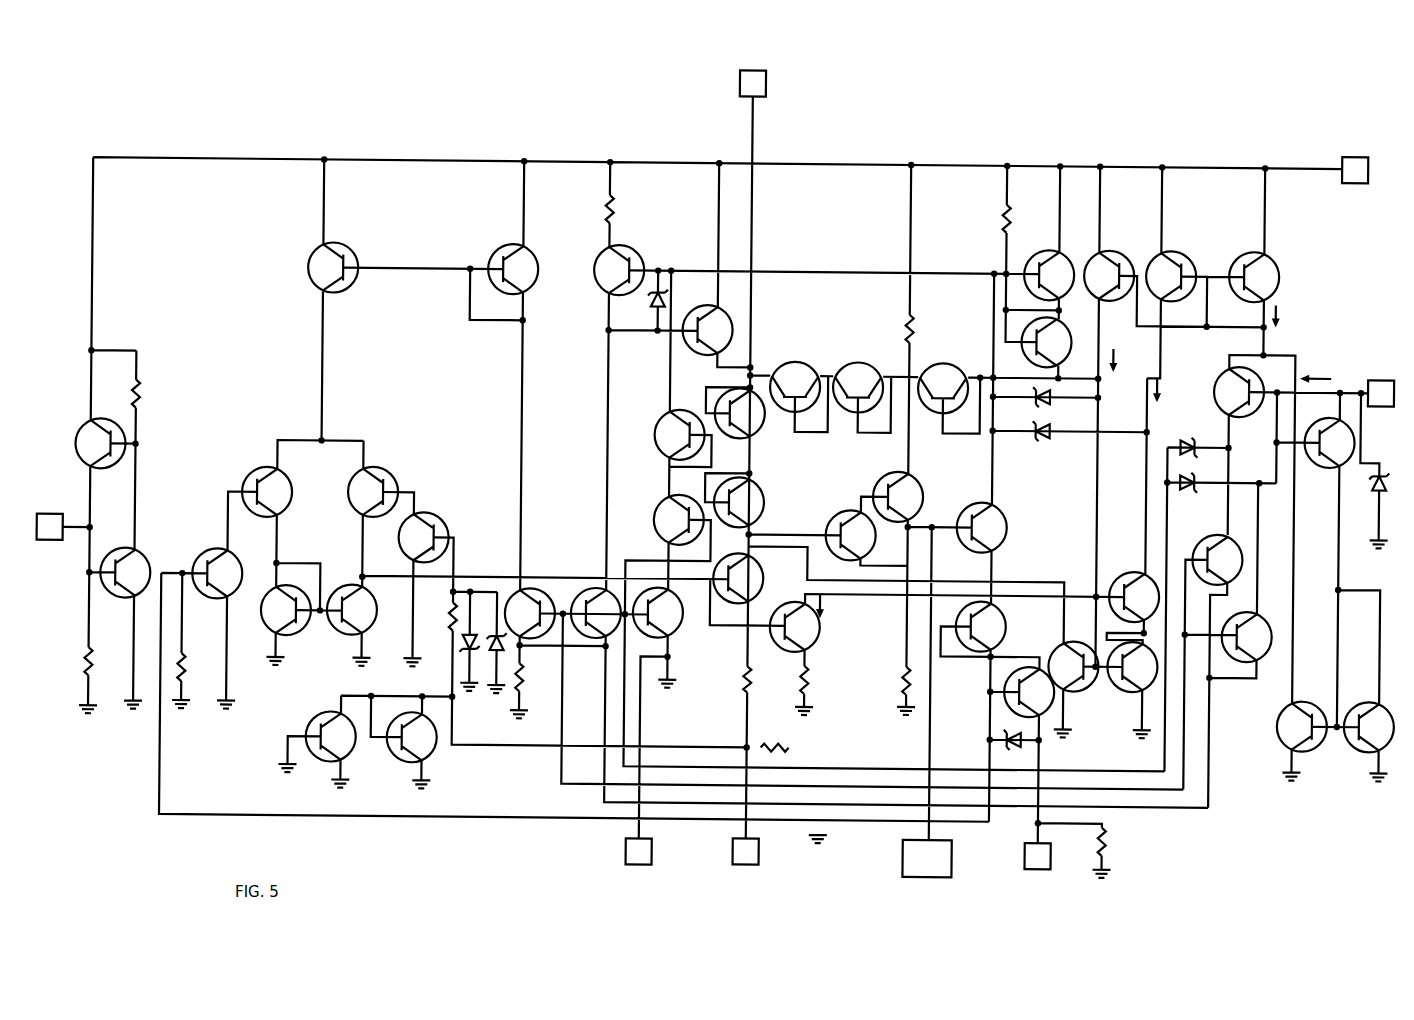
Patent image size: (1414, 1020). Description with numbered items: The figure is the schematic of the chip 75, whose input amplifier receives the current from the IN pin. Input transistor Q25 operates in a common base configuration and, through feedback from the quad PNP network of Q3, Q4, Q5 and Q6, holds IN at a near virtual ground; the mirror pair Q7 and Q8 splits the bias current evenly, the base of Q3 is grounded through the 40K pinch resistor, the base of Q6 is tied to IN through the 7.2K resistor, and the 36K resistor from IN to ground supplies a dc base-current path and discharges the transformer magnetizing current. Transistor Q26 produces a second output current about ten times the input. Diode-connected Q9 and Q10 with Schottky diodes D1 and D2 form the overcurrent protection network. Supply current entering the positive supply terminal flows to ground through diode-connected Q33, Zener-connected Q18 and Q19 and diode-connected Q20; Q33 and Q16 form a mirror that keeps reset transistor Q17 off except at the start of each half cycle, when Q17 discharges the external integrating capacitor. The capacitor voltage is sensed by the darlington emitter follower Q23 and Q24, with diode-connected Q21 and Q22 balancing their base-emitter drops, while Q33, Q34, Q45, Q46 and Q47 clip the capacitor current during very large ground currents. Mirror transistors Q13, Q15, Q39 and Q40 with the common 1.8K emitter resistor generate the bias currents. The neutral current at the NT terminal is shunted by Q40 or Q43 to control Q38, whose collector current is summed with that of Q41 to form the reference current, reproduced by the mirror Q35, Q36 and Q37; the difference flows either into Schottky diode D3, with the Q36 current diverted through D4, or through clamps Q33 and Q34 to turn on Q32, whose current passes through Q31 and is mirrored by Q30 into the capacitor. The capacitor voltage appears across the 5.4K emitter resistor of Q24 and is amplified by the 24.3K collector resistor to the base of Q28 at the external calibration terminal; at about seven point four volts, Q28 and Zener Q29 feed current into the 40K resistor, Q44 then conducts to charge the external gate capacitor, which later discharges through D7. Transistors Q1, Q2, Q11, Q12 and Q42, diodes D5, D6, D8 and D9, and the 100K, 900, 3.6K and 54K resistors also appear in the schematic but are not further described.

The chip 75 is at (700, 914).
The transistor Q1 is at (88, 434).
The transistor Q2 is at (135, 565).
The quad PNP transistor Q3 is at (215, 566).
The quad PNP transistor Q4 is at (258, 483).
The quad PNP transistor Q5 is at (387, 482).
The quad PNP transistor Q6 is at (435, 532).
The mirror transistor Q7 is at (279, 602).
The mirror transistor Q8 is at (352, 600).
The diode-connected transistor Q9 is at (319, 731).
The diode-connected transistor Q10 is at (431, 748).
The transistor Q11 is at (314, 267).
The transistor Q12 is at (495, 265).
The mirror transistor Q13 is at (518, 599).
The mirror transistor Q15 is at (593, 599).
The Schottky-clamped transistor Q16 is at (607, 268).
The reset transistor Q17 is at (707, 320).
The Zener-connected transistor Q18 is at (670, 431).
The Zener-connected transistor Q19 is at (663, 518).
The diode-connected transistor Q20 is at (675, 617).
The diode-connected transistor Q21 is at (753, 423).
The diode-connected transistor Q22 is at (758, 502).
The darlington emitter follower transistor Q23 is at (845, 516).
The darlington emitter follower transistor Q24 is at (891, 488).
The input transistor Q25 is at (755, 578).
The transistor Q26 is at (816, 627).
The transistor Q28 is at (1000, 526).
The Zener transistor Q29 is at (999, 626).
The mirror transistor Q30 is at (1073, 652).
The mirror transistor Q31 is at (1127, 678).
The comparator transistor Q32 is at (1129, 585).
The diode-connected transistor Q33 is at (1046, 263).
The diode-connected transistor Q34 is at (1060, 342).
The current mirror transistor Q35 is at (1114, 264).
The current mirror transistor Q36 is at (1178, 265).
The current mirror transistor Q37 is at (1254, 262).
The transistor Q38 is at (1220, 383).
The mirror transistor Q39 is at (1226, 548).
The mirror transistor Q40 is at (1255, 624).
The transistor Q41 is at (1303, 712).
The transistor Q42 is at (1367, 713).
The transistor Q43 is at (1327, 457).
The transistor Q44 is at (993, 691).
The diode-connected transistor Q45 is at (795, 373).
The diode-connected transistor Q46 is at (858, 373).
The diode-connected transistor Q47 is at (943, 376).
The Schottky diode D1 is at (454, 642).
The Schottky diode D2 is at (488, 654).
The Schottky diode D3 is at (1024, 398).
The diode D4 is at (1056, 416).
The zener diode D5 is at (1181, 432).
The zener diode D6 is at (1191, 502).
The diode D7 is at (1039, 745).
The zener diode D8 is at (645, 303).
The zener diode D9 is at (1369, 494).
The 100K resistor 100K is at (123, 524).
The pinch resistor 40K is at (594, 436).
The resistor 7.2K is at (435, 613).
The common emitter resistor 1.8K is at (540, 680).
The 900 ohm resistor 900 is at (634, 209).
The resistor 36K is at (739, 709).
The 3.6K resistor 3.6K is at (831, 680).
The emitter resistor 5.4K is at (936, 327).
The collector resistor 24.3K is at (885, 668).
The 54K resistor 54K is at (1129, 842).